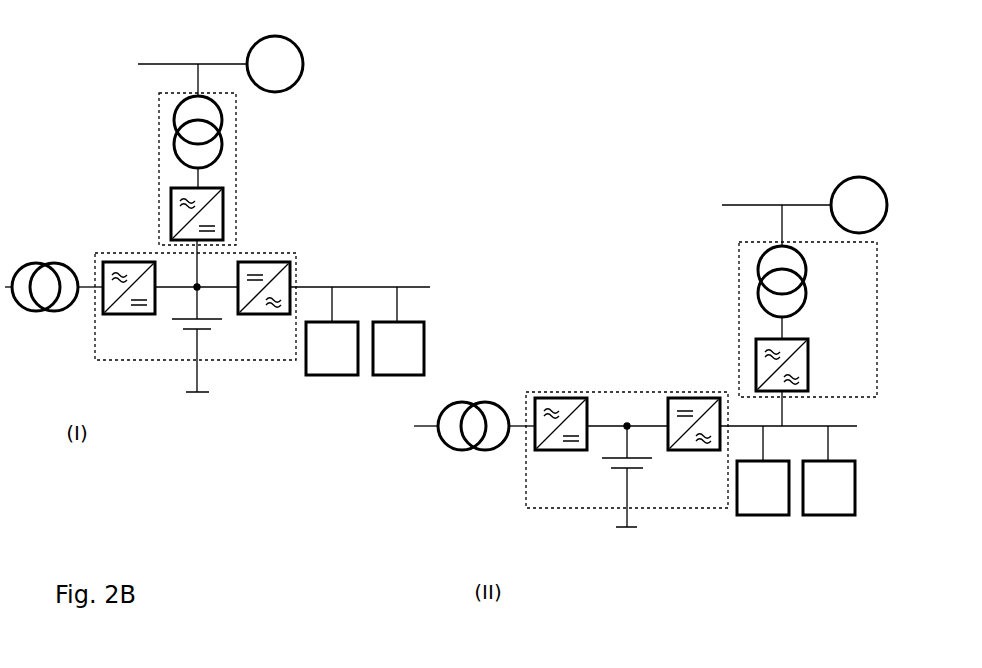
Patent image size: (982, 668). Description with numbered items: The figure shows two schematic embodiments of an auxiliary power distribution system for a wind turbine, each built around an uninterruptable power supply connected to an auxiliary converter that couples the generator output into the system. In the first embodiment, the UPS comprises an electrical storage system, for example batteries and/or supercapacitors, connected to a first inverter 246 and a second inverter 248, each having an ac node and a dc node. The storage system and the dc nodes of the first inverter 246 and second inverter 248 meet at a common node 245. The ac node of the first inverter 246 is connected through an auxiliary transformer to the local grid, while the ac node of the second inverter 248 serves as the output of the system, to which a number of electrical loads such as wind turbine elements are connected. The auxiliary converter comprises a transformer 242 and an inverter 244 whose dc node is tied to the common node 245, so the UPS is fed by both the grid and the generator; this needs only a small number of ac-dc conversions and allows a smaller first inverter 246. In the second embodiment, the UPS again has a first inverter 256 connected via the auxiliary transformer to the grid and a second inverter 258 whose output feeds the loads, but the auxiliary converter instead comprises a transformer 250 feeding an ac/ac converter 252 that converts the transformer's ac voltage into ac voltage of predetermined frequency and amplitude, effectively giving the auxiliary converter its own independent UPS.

The transformer 242 is at (222, 129).
The inverter 244 is at (182, 220).
The common node 245 is at (190, 293).
The first inverter 246 is at (103, 265).
The second inverter 248 is at (285, 262).
The transformer 250 is at (803, 281).
The ac/ac converter 252 is at (762, 343).
The first inverter 256 is at (565, 398).
The second inverter 258 is at (713, 398).